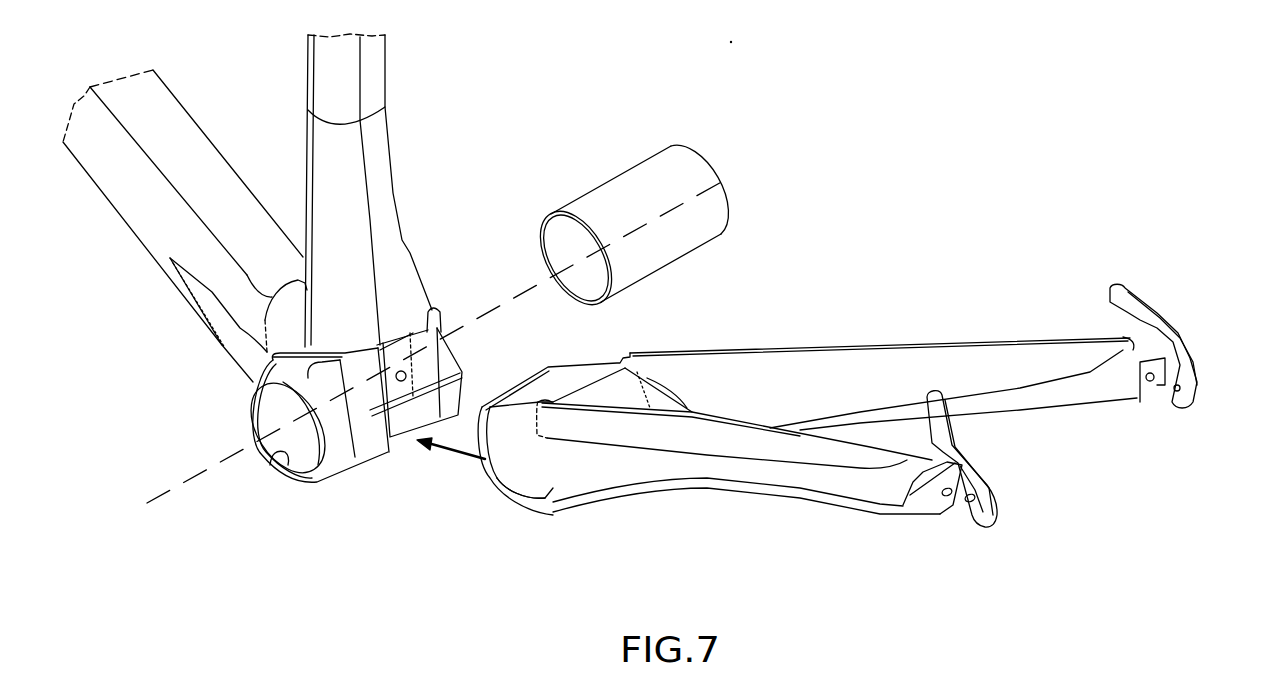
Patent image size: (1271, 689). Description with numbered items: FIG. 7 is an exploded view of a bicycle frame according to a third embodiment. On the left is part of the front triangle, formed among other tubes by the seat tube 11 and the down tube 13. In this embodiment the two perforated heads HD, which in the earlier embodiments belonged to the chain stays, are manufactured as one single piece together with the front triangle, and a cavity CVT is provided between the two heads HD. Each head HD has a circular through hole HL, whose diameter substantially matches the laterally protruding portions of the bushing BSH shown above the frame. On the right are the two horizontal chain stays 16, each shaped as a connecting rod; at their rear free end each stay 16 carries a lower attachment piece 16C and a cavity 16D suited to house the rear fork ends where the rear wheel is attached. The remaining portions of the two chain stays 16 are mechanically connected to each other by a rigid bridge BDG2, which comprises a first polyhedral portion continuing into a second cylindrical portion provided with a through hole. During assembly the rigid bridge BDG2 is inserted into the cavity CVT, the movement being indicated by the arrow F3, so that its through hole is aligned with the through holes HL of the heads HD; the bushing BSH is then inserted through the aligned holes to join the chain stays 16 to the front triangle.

The seat tube 11 is at (377, 132).
The down tube 13 is at (203, 143).
The horizontal chain stay 16 is at (846, 414).
The lower attachment piece 16C is at (940, 423).
The cavity 16D is at (966, 514).
The bushing BSH is at (702, 167).
The perforated head HD is at (315, 485).
The circular through hole HL is at (400, 380).
The cavity CVT is at (450, 372).
The assembly direction F3 is at (447, 461).
The rigid bridge BDG2 is at (590, 366).